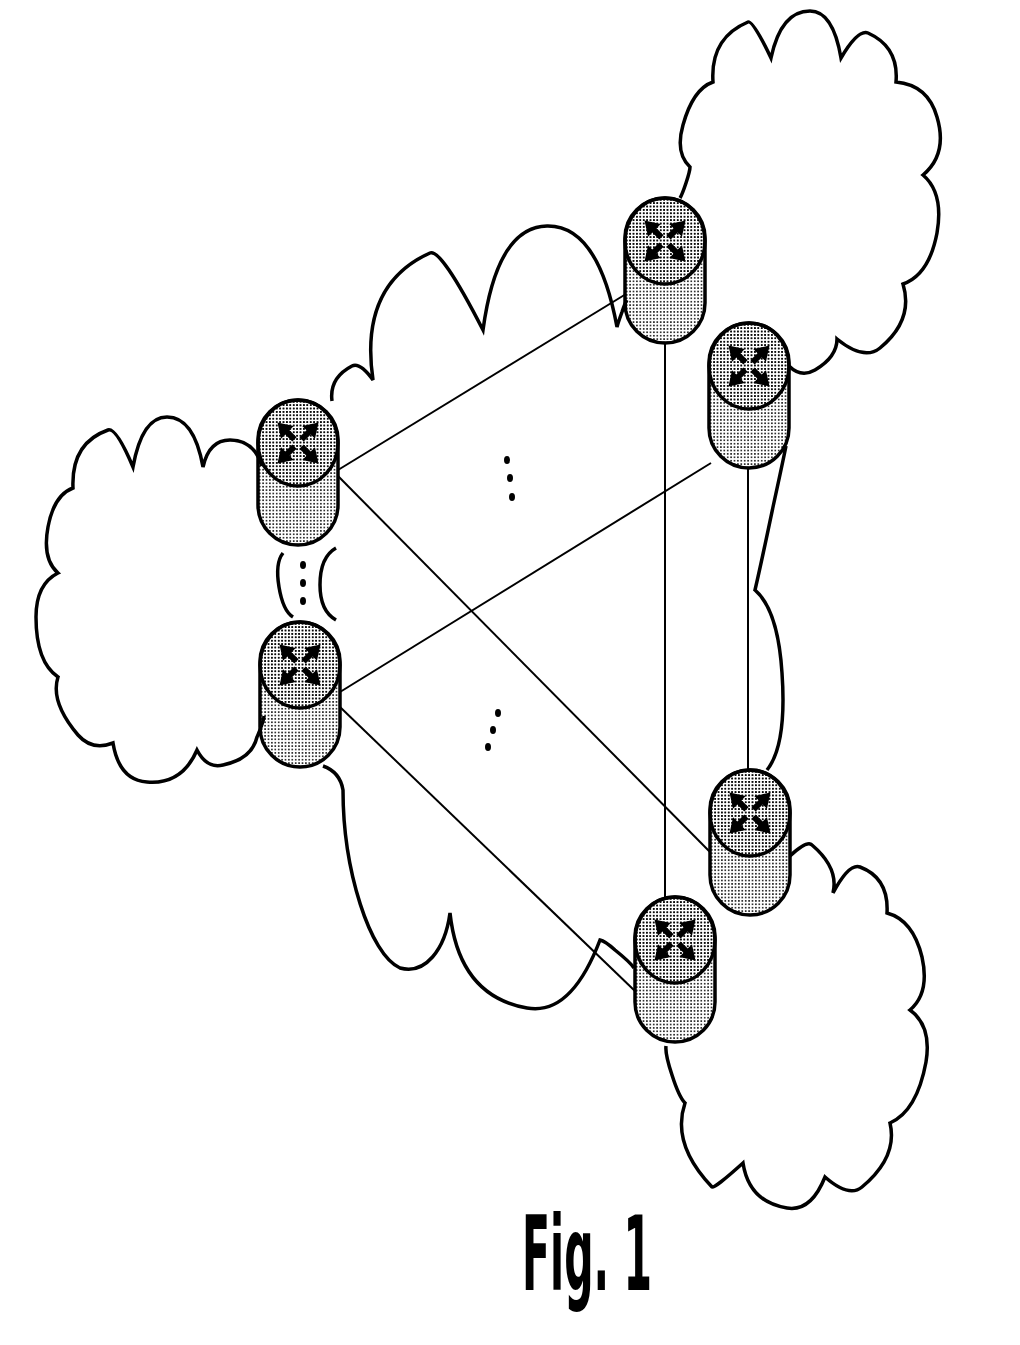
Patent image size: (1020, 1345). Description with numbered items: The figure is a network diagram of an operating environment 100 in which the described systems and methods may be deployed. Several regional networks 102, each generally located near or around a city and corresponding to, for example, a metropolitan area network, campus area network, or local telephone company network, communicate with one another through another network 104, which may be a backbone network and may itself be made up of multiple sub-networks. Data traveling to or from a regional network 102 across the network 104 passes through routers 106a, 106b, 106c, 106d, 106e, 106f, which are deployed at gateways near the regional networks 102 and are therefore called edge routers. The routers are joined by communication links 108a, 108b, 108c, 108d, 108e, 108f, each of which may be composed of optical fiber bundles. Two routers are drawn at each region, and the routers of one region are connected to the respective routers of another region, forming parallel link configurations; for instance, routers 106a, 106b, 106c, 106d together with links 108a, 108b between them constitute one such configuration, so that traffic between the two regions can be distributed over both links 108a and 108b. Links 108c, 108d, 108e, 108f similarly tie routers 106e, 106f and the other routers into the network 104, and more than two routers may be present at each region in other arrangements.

The operating environment 100 is at (168, 126).
The regional network 102 is at (810, 1079).
The network 104 is at (538, 651).
The router 106a is at (298, 768).
The router 106b is at (298, 399).
The router 106c is at (641, 206).
The router 106d is at (785, 432).
The router 106e is at (792, 808).
The router 106f is at (667, 1038).
The communication link 108a is at (643, 503).
The communication link 108b is at (466, 394).
The communication link 108c is at (610, 750).
The communication link 108d is at (467, 830).
The communication link 108e is at (665, 570).
The communication link 108f is at (748, 563).